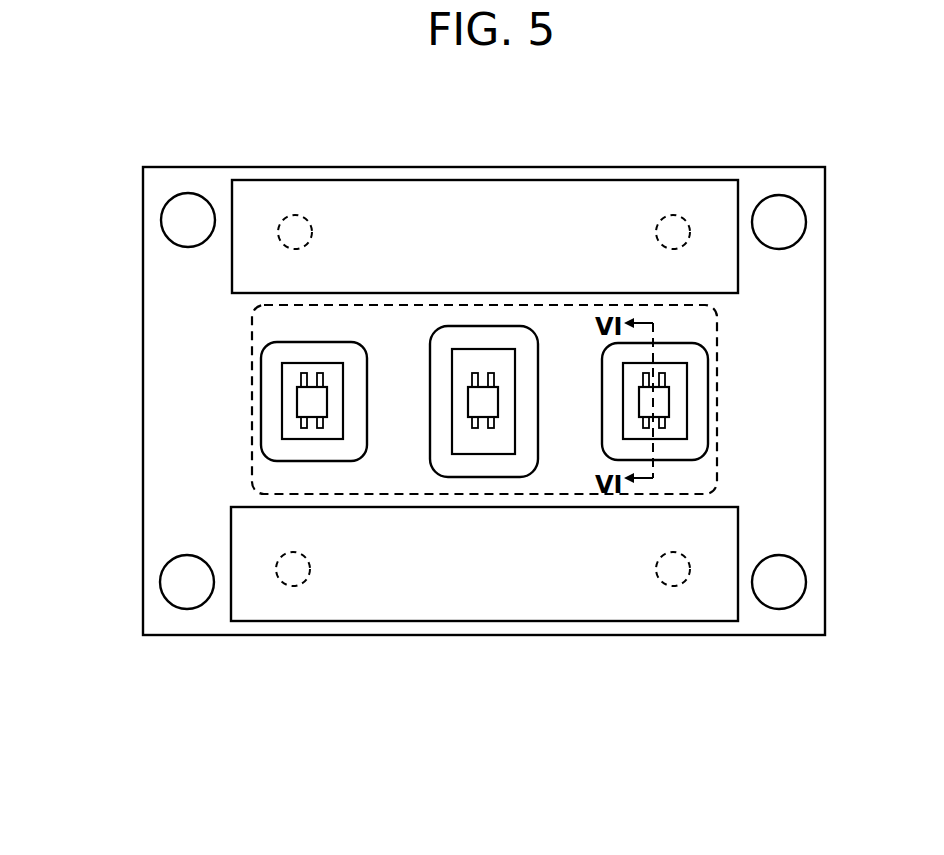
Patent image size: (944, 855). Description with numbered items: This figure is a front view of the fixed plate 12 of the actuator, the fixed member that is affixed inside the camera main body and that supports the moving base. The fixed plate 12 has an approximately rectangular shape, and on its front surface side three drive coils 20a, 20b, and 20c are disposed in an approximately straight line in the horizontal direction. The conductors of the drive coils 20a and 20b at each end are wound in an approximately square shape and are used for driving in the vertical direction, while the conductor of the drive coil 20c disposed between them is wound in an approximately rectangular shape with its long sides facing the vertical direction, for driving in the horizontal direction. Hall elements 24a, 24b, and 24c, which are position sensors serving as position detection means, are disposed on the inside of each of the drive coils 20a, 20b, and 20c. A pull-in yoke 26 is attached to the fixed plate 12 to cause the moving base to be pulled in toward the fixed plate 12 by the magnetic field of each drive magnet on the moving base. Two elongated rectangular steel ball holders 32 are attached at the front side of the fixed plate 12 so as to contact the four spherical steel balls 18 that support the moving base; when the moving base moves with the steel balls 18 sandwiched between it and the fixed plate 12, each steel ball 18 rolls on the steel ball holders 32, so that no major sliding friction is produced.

The fixed plate 12 is at (790, 178).
The steel balls 18 is at (283, 219).
The drive coil 20a is at (692, 442).
The drive coil 20b is at (325, 449).
The drive coil 20c is at (523, 430).
The Hall element 24a is at (655, 400).
The Hall element 24b is at (315, 400).
The Hall element 24c is at (483, 402).
The pull-in yoke 26 is at (277, 318).
The steel ball holder 32 is at (510, 203).